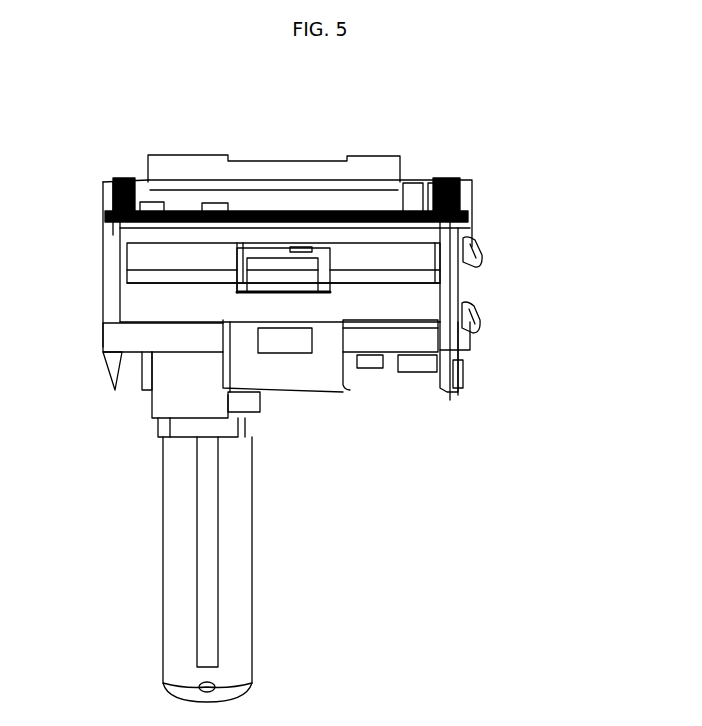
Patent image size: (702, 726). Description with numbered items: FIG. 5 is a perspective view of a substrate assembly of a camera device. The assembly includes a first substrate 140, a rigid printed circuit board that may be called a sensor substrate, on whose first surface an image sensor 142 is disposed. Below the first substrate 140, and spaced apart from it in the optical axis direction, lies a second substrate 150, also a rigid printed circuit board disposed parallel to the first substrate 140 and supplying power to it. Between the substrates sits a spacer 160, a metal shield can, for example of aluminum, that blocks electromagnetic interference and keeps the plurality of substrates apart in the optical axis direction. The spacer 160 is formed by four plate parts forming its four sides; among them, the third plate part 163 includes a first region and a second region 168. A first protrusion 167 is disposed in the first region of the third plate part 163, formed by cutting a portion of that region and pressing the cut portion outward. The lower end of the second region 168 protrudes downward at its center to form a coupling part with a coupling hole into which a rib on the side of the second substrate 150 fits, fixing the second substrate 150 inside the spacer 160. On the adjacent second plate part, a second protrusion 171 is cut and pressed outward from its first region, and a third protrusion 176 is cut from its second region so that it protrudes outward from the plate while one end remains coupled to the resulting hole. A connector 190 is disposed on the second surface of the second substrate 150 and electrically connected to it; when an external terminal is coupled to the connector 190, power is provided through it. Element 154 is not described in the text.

The first substrate 140 is at (474, 202).
The image sensor 142 is at (379, 162).
The second substrate 150 is at (443, 350).
The window 154 is at (290, 345).
The spacer 160 is at (410, 250).
The third plate part 163 is at (378, 302).
The first protrusion 167 is at (283, 265).
The second region 168 is at (323, 387).
The second protrusion 171 is at (480, 256).
The third protrusion 176 is at (478, 321).
The connector 190 is at (178, 518).